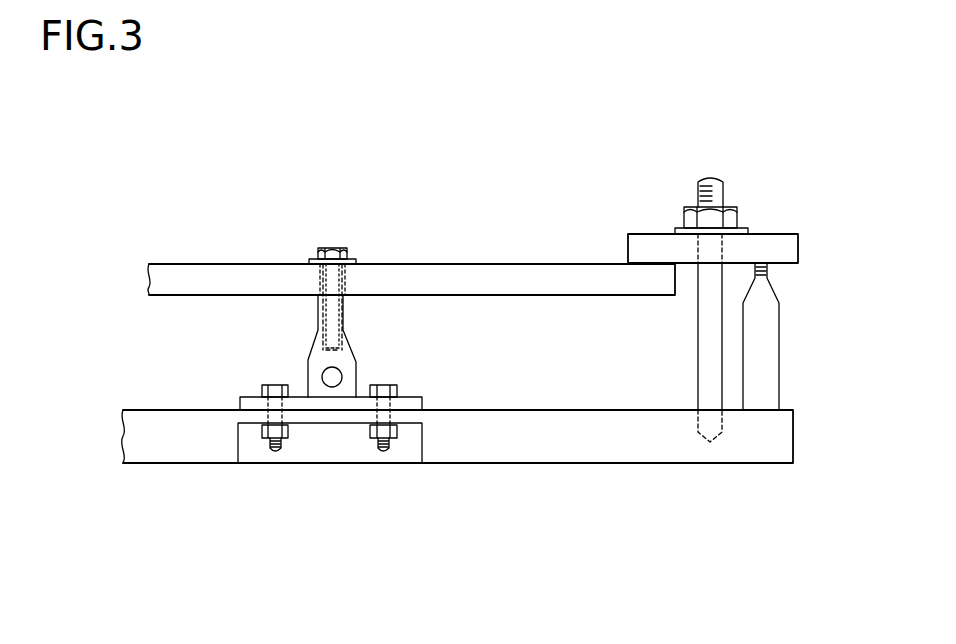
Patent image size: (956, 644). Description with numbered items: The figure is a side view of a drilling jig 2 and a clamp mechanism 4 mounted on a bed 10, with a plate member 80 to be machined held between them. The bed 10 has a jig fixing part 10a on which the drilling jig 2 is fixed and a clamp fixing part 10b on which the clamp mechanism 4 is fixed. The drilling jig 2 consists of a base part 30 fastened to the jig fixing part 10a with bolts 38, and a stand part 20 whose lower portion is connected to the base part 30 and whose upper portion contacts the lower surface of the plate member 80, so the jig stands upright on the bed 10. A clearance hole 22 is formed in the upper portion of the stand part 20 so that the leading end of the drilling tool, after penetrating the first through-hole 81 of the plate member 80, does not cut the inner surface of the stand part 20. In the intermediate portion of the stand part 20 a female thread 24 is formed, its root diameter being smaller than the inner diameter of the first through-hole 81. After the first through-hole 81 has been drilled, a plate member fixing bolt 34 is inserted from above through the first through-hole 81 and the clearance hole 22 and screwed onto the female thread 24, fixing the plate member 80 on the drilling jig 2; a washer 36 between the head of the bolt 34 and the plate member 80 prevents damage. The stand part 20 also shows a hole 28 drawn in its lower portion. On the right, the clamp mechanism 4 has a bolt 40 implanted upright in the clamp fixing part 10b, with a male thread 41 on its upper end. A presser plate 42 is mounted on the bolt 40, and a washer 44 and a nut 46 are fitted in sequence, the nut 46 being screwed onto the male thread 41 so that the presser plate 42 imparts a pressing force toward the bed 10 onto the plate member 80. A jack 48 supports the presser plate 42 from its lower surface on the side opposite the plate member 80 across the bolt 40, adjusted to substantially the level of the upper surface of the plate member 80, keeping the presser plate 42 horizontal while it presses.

The drilling jig 2 is at (372, 240).
The clamp mechanism 4 is at (678, 320).
The bed 10 is at (178, 468).
The jig fixing part 10a is at (420, 468).
The clamp fixing part 10b is at (700, 440).
The stand part 20 is at (344, 321).
The clearance hole 22 is at (320, 310).
The female thread 24 is at (342, 343).
The hole of bracket 28 is at (322, 376).
The base part 30 is at (240, 400).
The plate member fixing bolt 34 is at (334, 247).
The washer 36 is at (312, 259).
The bolts 38 is at (262, 388).
The bolt 40 is at (697, 350).
The male thread 41 is at (724, 193).
The presser plate 42 is at (633, 236).
The washer 44 is at (683, 224).
The nut 46 is at (748, 230).
The jack 48 is at (780, 332).
The plate member 80 is at (196, 262).
The first through-hole 81 is at (335, 278).